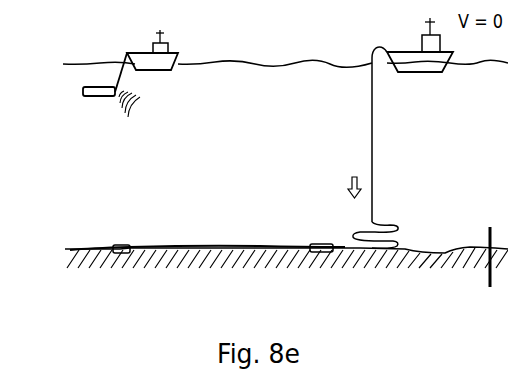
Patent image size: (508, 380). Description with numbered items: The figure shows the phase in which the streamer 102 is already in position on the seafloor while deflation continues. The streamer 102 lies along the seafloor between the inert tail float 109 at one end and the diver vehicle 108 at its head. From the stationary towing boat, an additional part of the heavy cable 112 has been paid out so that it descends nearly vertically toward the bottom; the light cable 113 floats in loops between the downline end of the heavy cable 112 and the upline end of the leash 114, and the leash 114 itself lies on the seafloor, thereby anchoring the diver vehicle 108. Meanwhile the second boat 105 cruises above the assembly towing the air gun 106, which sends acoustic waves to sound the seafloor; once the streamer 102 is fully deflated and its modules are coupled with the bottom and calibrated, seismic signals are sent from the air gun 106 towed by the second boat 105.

The streamer 102 is at (214, 246).
The second boat 105 is at (158, 66).
The air gun 106 is at (96, 96).
The diver vehicle 108 is at (310, 245).
The inert tail float 109 is at (120, 245).
The heavy cable 112 is at (374, 128).
The light cable 113 is at (396, 224).
The leash 114 is at (347, 246).